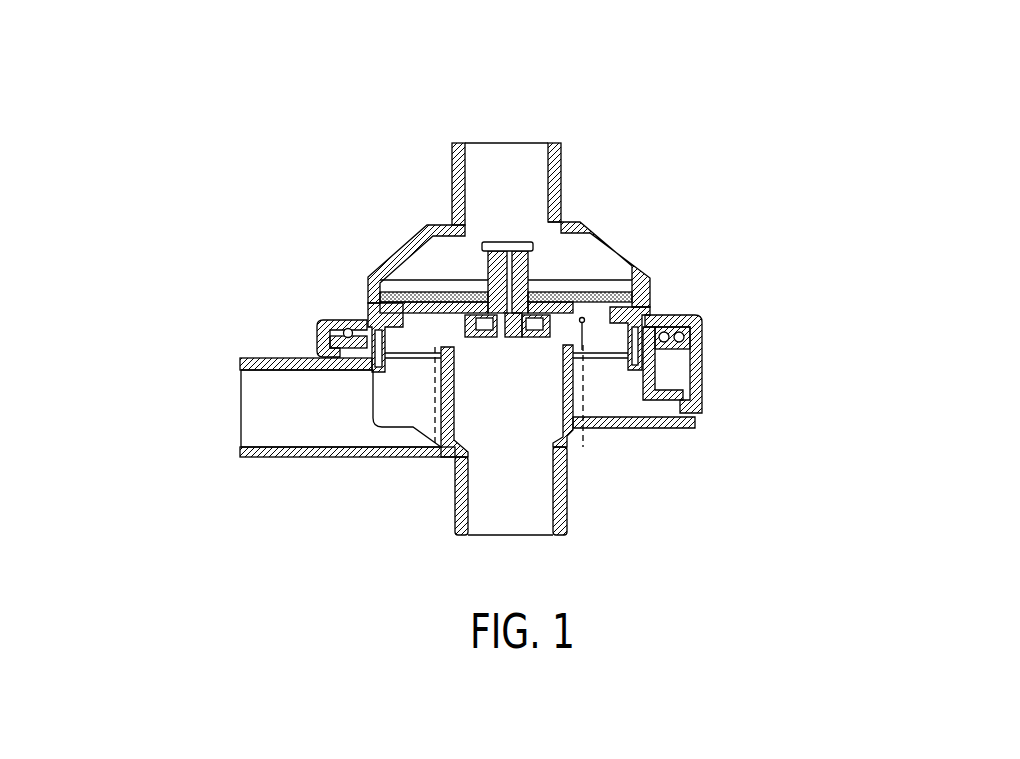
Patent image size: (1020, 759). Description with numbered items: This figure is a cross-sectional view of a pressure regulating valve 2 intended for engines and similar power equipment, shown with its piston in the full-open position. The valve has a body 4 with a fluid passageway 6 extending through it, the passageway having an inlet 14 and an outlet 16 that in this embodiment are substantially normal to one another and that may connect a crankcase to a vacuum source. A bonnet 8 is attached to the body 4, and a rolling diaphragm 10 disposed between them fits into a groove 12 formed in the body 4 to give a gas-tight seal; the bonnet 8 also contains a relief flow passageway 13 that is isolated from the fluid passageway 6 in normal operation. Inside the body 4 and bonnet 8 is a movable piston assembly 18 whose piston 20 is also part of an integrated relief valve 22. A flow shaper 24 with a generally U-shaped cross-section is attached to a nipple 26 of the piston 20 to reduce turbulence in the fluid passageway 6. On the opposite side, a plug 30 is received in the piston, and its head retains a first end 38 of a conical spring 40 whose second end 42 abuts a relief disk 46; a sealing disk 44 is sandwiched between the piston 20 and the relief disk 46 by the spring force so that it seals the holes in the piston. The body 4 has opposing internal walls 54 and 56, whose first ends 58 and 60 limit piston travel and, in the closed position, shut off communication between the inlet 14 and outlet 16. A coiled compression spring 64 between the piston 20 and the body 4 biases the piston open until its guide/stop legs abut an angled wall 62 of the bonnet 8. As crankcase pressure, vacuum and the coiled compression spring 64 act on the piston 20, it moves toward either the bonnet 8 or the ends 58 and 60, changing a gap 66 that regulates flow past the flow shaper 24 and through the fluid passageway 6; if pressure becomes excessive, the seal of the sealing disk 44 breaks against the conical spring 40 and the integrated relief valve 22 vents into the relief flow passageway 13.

The pressure regulating valve 2 is at (860, 124).
The body 4 is at (242, 357).
The fluid passageway 6 is at (478, 433).
The bonnet 8 is at (432, 268).
The rolling diaphragm 10 is at (698, 340).
The groove 12 is at (698, 357).
The relief flow passageway 13 is at (512, 177).
The inlet 14 is at (262, 412).
The outlet 16 is at (530, 520).
The piston assembly 18 is at (447, 172).
The piston 20 is at (653, 288).
The integrated relief valve 22 is at (405, 244).
The flow shaper 24 is at (372, 302).
The nipple 26 is at (486, 233).
The plug 30 is at (557, 160).
The first end of conical spring 38 is at (520, 250).
The conical spring 40 is at (528, 262).
The second end of conical spring 42 is at (575, 281).
The sealing disk 44 is at (648, 278).
The relief disk 46 is at (330, 330).
The internal wall 54 is at (415, 455).
The internal wall 56 is at (582, 438).
The first end of internal wall 58 is at (440, 363).
The first end of internal wall 60 is at (640, 425).
The angled wall 62 is at (348, 328).
The coiled compression spring 64 is at (614, 325).
The gap 66 is at (652, 306).